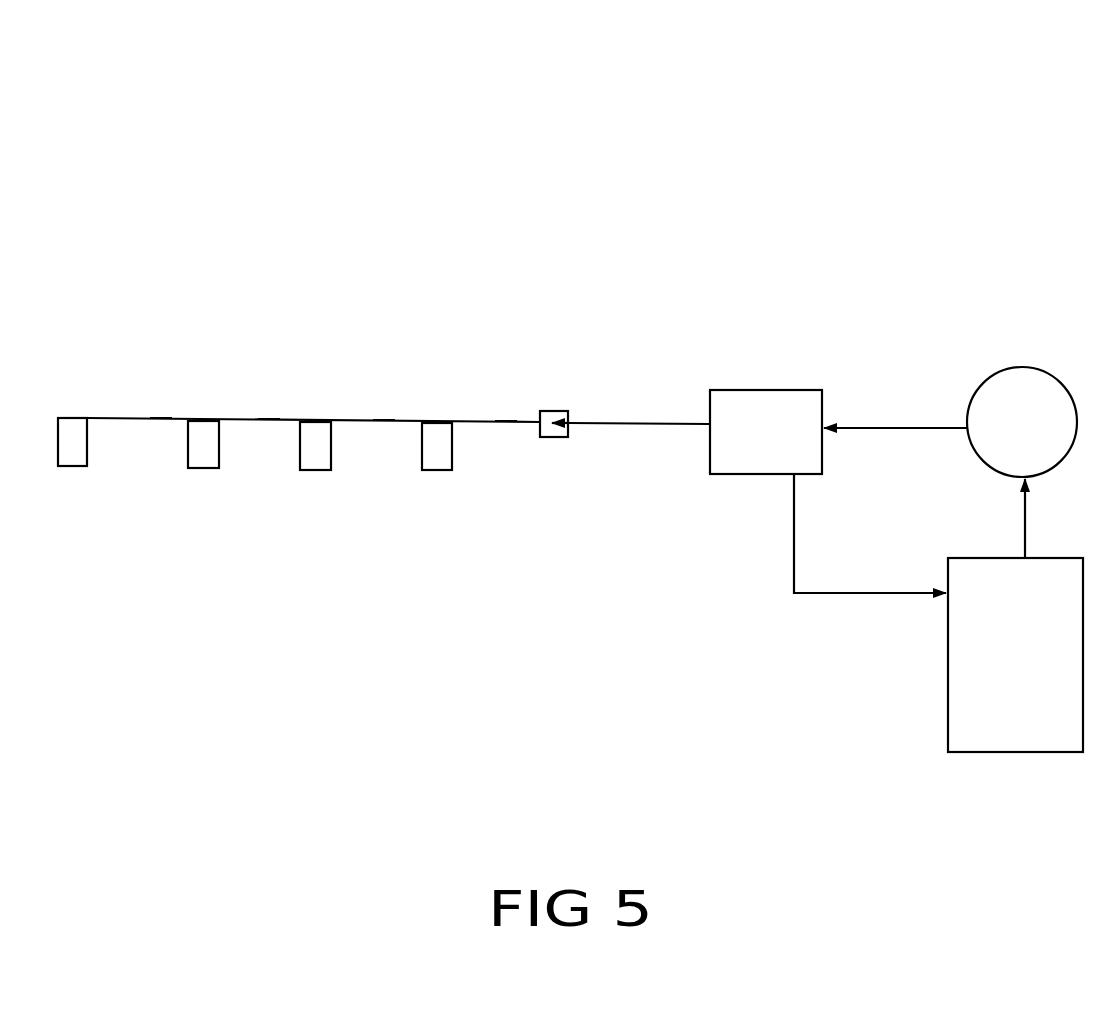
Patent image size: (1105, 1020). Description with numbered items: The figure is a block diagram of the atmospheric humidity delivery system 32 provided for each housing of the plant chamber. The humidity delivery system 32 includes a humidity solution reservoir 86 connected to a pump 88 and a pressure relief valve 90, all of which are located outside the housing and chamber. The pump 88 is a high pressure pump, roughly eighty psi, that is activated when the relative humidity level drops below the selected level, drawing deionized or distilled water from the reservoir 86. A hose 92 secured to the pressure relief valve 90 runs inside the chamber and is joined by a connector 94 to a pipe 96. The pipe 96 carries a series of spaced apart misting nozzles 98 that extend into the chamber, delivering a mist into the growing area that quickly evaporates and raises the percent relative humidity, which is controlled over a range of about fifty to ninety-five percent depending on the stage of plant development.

The atmospheric humidity delivery system 32 is at (683, 278).
The humidity solution reservoir 86 is at (946, 655).
The pump 88 is at (1018, 365).
The pressure relief valve 90 is at (762, 388).
The hose 92 is at (640, 420).
The connector 94 is at (553, 439).
The pipe 96 is at (162, 416).
The misting nozzles 98 is at (90, 480).